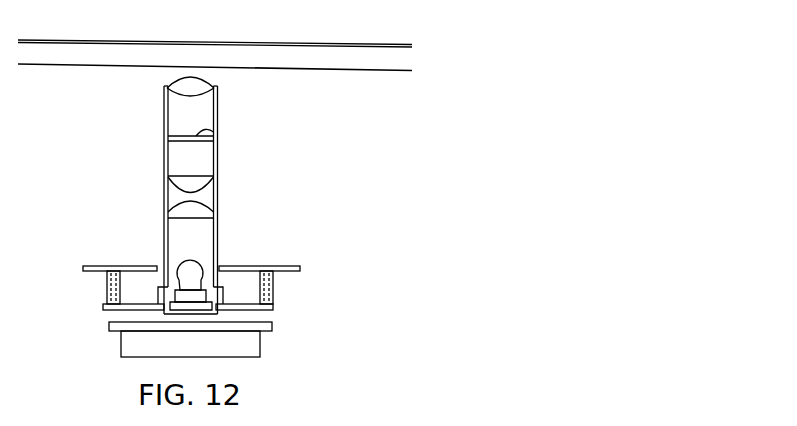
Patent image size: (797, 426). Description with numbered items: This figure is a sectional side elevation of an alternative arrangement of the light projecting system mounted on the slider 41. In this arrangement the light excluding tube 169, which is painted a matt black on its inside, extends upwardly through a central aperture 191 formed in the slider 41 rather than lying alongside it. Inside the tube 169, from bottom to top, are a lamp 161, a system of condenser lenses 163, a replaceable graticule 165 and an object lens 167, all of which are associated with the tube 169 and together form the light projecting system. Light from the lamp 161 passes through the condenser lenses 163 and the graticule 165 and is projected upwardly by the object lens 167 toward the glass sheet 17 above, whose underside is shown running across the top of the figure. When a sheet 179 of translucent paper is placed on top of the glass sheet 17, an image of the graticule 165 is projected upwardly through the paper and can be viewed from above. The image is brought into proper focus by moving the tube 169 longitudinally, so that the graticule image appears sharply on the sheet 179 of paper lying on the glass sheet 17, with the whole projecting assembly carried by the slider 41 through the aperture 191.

The glass sheet 17 is at (97, 52).
The sheet of translucent paper 179 is at (273, 44).
The object lens 167 is at (201, 80).
The replaceable graticule 165 is at (213, 131).
The light excluding tube 169 is at (218, 147).
The system of condenser lenses 163 is at (204, 192).
The lamp 161 is at (193, 272).
The central aperture 191 is at (157, 262).
The slider 41 is at (268, 268).